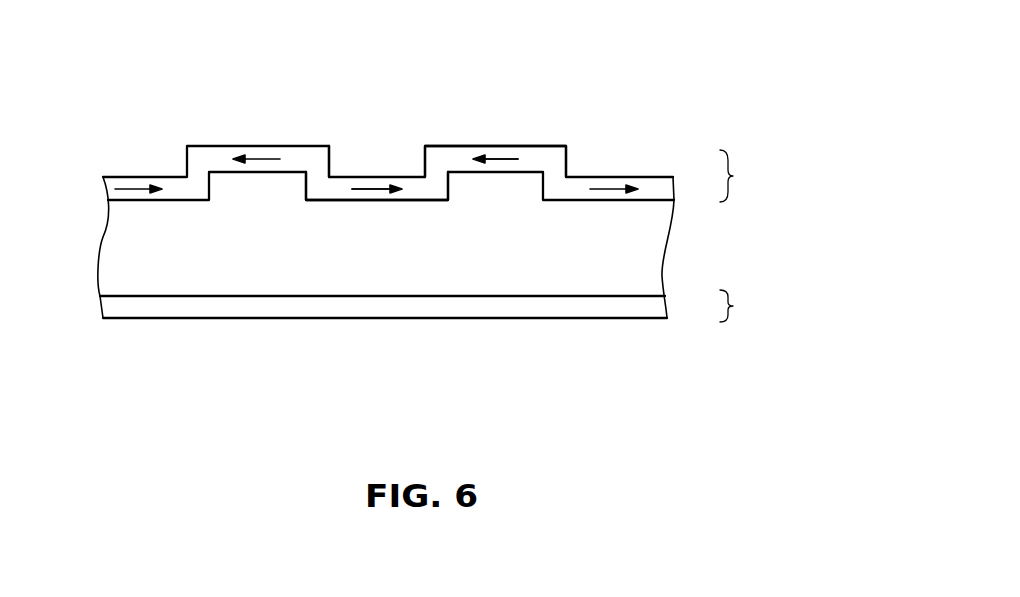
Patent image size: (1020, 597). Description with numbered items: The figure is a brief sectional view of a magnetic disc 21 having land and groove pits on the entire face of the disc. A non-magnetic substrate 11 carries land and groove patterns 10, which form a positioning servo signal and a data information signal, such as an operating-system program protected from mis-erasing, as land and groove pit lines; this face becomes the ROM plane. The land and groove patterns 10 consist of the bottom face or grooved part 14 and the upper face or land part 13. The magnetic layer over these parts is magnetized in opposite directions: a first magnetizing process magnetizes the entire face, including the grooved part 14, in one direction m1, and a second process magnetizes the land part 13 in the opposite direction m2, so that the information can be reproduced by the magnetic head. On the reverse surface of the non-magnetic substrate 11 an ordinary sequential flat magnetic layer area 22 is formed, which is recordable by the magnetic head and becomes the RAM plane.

The magnetic disc 21 is at (133, 40).
The non-magnetic substrate 11 is at (108, 237).
The land and groove patterns 10 is at (508, 66).
The bottom face (grooved part) 14 is at (381, 177).
The upper face (land part) 13 is at (478, 146).
The flat magnetic layer area 22 is at (155, 318).
The first magnetizing direction m1 is at (371, 190).
The second magnetizing direction m2 is at (500, 161).